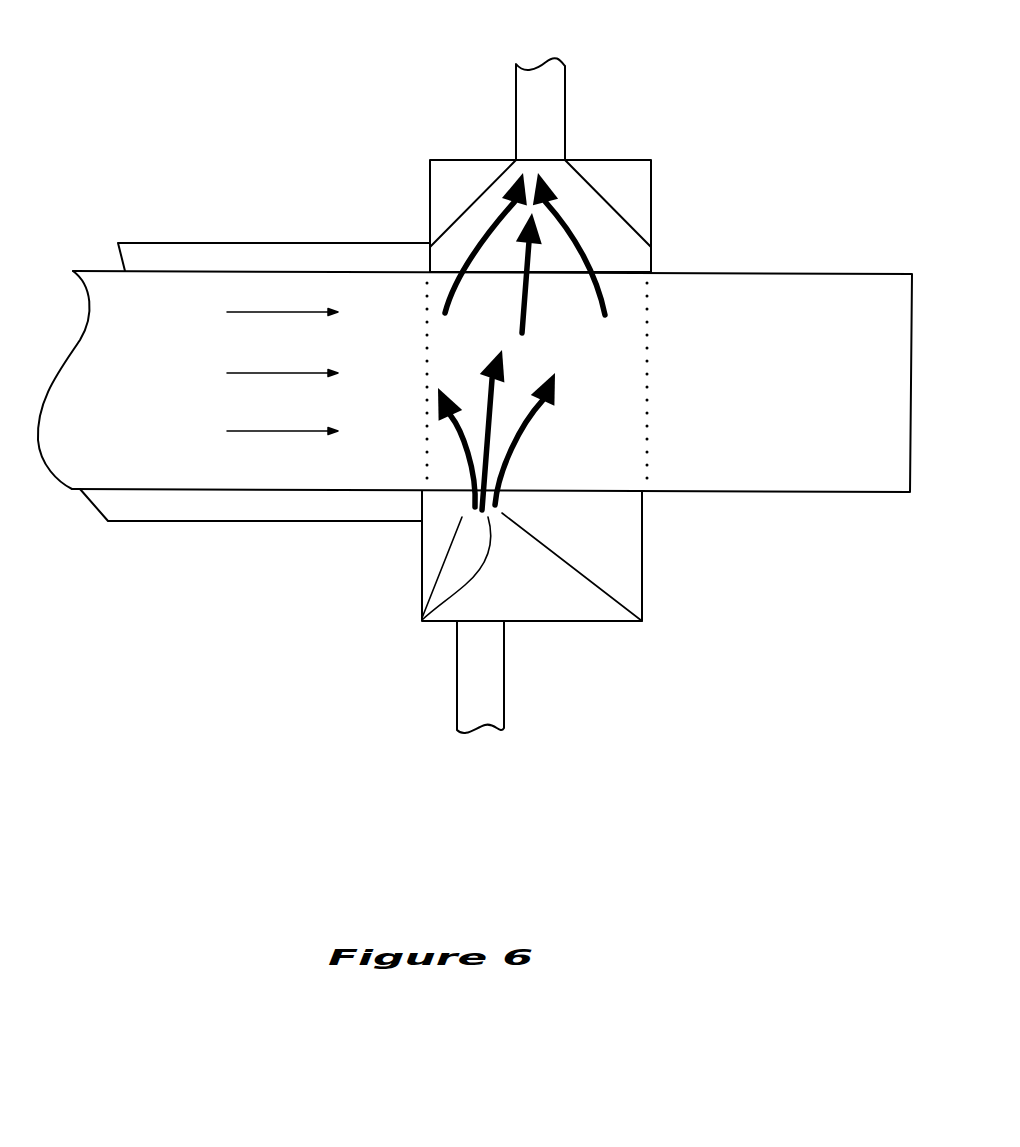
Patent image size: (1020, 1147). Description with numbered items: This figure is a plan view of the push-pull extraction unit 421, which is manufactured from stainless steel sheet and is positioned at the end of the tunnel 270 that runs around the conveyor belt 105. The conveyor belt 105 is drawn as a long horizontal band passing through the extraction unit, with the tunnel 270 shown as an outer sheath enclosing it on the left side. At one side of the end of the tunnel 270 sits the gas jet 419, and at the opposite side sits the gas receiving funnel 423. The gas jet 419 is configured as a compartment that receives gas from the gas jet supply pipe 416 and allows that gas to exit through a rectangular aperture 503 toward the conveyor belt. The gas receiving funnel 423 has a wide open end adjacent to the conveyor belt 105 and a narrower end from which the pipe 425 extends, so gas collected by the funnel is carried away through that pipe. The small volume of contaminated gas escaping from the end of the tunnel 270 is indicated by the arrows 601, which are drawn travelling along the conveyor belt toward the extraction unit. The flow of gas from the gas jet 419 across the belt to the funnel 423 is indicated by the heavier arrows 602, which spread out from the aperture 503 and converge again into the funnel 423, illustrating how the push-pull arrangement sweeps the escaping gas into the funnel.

The conveyor belt 105 is at (475, 381).
The tunnel 270 is at (355, 523).
The arrows indicating contaminated gas 601 is at (257, 312).
The push-pull extraction unit 421 is at (372, 120).
The pipe 425 is at (563, 130).
The gas receiving funnel 423 is at (627, 226).
The arrows indicating gas flow 602 is at (583, 253).
The gas jet 419 is at (613, 598).
The rectangular aperture 503 is at (427, 615).
The gas jet supply pipe 416 is at (492, 692).